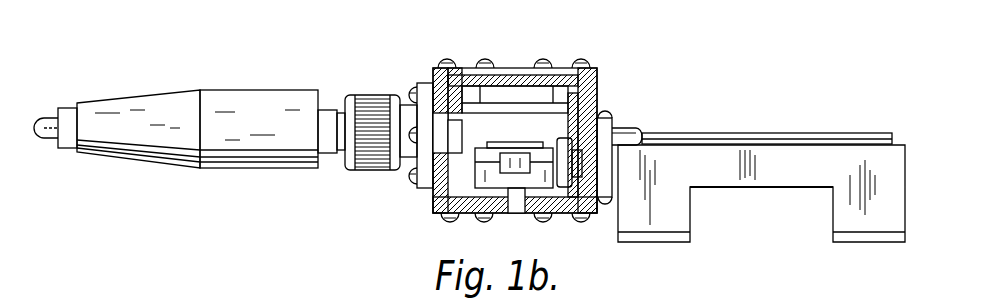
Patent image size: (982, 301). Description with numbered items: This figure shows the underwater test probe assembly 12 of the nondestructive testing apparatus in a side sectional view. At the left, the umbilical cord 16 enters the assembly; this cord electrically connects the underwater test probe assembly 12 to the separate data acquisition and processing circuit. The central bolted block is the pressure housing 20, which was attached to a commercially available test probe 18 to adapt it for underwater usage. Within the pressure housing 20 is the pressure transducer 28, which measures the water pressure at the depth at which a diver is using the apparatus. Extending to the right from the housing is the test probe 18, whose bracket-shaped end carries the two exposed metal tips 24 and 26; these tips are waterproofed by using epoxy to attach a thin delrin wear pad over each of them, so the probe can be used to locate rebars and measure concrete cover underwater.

The underwater test probe assembly 12 is at (413, 68).
The umbilical cord 16 is at (260, 170).
The test probe 18 is at (788, 158).
The pressure housing 20 is at (600, 72).
The exposed metal tip 24 is at (762, 215).
The exposed metal tip 26 is at (692, 222).
The pressure transducer 28 is at (467, 215).